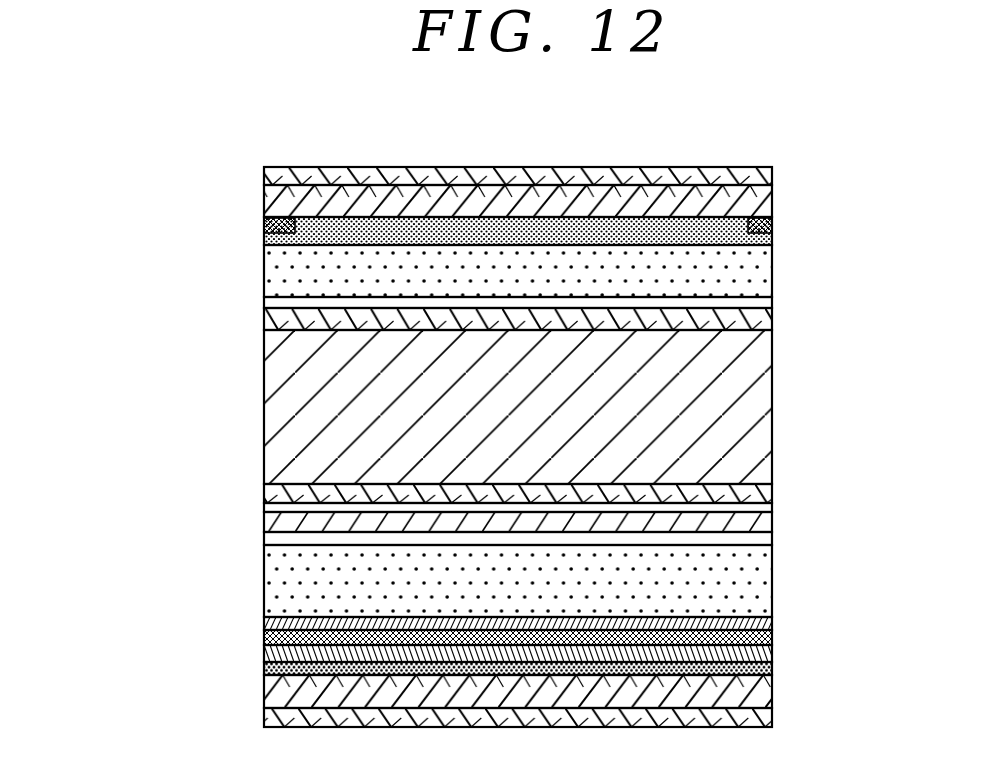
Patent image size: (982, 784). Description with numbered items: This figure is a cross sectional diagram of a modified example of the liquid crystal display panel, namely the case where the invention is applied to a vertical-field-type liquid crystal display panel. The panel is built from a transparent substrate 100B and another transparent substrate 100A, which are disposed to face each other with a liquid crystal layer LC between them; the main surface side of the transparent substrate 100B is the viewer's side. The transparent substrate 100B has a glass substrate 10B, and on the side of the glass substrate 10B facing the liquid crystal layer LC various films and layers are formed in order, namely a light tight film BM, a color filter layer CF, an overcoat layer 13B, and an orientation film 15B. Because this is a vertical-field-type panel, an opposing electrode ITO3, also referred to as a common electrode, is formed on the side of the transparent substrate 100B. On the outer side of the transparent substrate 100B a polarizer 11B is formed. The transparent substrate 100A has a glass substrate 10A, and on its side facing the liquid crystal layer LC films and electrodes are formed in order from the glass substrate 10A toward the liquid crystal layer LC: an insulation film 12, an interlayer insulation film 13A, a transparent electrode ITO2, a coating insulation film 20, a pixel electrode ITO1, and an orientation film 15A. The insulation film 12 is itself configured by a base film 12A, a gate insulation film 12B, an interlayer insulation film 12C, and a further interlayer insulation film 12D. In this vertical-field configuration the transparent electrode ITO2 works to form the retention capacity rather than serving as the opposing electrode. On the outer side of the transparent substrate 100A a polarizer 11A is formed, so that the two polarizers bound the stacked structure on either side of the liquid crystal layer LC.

The polarizer 11B is at (263, 180).
The glass substrate 10B is at (278, 205).
The color filter layer CF is at (383, 235).
The light tight film BM is at (266, 226).
The overcoat layer 13B is at (278, 270).
The opposing electrode ITO3 is at (265, 303).
The orientation film 15B is at (278, 318).
The transparent substrate 100B is at (517, 224).
The liquid crystal layer LC is at (781, 332).
The orientation film 15A is at (264, 493).
The pixel electrode ITO1 is at (264, 507).
The coating insulation film 20 is at (264, 520).
The transparent electrode ITO2 is at (264, 537).
The interlayer insulation film 13A is at (278, 572).
The insulation film 12 is at (396, 648).
The interlayer insulation film 12D is at (262, 628).
The interlayer insulation film 12C is at (262, 640).
The gate insulation film 12B is at (262, 652).
The base film 12A is at (262, 668).
The glass substrate 10A is at (264, 693).
The polarizer 11A is at (264, 715).
The transparent substrate 100A is at (451, 595).